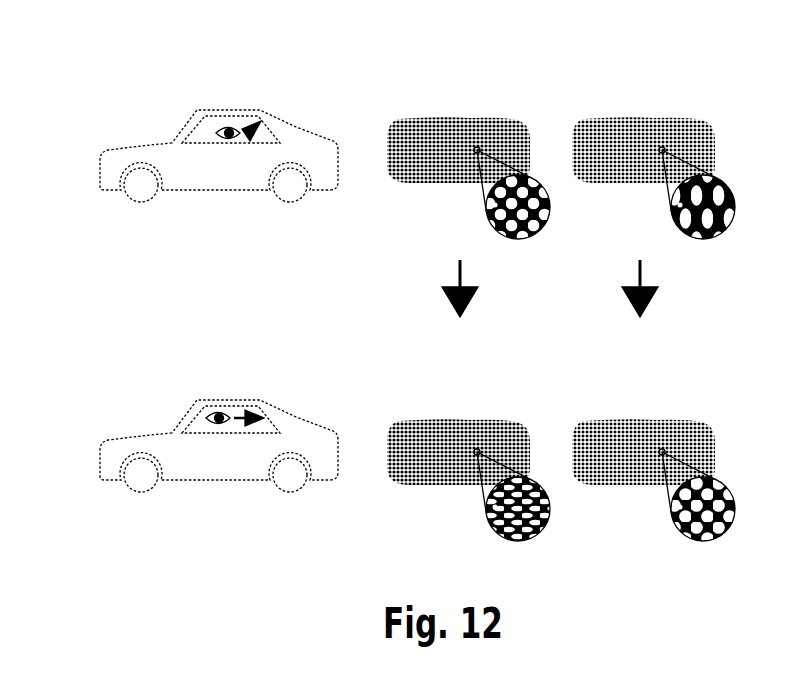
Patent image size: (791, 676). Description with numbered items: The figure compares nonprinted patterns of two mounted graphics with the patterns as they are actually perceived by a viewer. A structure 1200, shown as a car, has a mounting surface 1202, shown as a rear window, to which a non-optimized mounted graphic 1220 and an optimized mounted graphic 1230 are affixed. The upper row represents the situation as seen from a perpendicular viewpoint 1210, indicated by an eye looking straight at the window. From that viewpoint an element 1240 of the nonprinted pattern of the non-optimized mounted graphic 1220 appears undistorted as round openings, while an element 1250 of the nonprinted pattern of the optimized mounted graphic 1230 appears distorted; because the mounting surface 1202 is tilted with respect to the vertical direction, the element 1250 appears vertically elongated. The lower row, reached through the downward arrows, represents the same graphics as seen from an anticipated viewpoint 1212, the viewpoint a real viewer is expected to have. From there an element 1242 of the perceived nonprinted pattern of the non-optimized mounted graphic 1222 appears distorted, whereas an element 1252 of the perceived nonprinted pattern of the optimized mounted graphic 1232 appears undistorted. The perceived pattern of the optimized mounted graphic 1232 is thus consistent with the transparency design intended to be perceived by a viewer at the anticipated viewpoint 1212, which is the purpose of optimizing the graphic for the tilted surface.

The structure 1200 is at (150, 145).
The mounting surface 1202 is at (277, 117).
The perpendicular viewpoint 1210 is at (229, 128).
The anticipated viewpoint 1212 is at (219, 413).
The non-optimized mounted graphic 1220 is at (452, 118).
The optimized mounted graphic 1230 is at (647, 118).
The element of nonprinted pattern of non-optimized mounted graphic 1240 is at (490, 209).
The element of nonprinted pattern of optimized mounted graphic 1250 is at (675, 209).
The non-optimized mounted graphic as perceived from anticipated viewpoint 1222 is at (465, 420).
The optimized mounted graphic as perceived from anticipated viewpoint 1232 is at (665, 420).
The element of perceived nonprinted pattern of non-optimized mounted graphic 1242 is at (490, 511).
The element of perceived nonprinted pattern of optimized mounted graphic 1252 is at (675, 511).